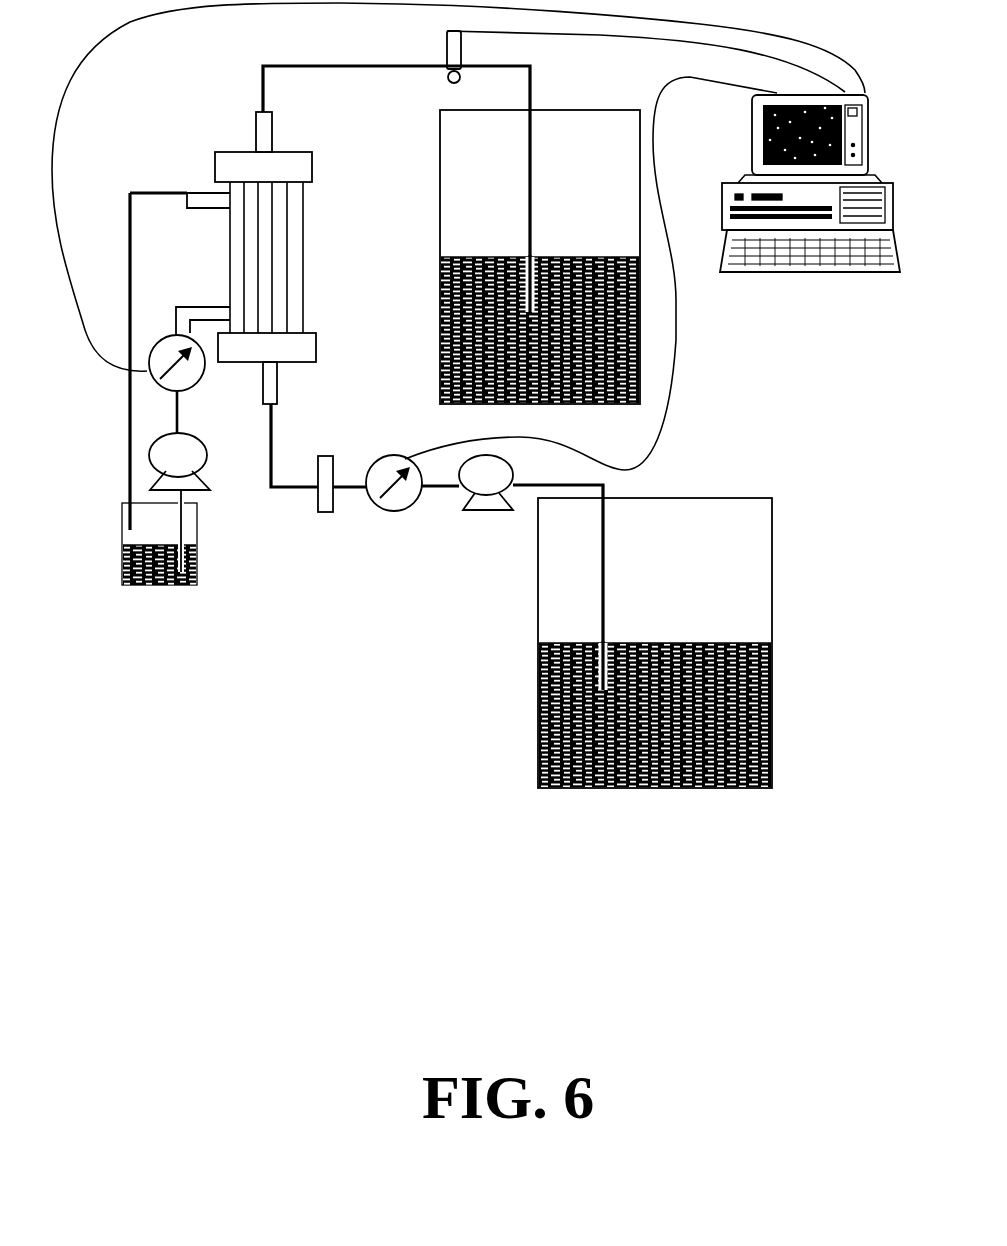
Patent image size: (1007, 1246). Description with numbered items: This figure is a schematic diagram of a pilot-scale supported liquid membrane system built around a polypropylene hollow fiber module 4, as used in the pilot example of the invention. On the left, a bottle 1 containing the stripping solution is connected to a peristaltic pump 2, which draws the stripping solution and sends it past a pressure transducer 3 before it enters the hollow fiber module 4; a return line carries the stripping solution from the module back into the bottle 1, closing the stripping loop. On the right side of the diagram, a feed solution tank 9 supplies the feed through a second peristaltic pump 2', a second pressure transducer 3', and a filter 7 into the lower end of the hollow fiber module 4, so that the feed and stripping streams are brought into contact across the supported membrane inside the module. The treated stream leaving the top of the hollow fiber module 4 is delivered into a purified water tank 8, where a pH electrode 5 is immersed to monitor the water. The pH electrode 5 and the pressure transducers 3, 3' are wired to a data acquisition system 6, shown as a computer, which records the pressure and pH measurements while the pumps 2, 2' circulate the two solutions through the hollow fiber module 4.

The bottle 1 is at (159, 415).
The peristaltic pump 2 is at (191, 441).
The pressure transducer 3 is at (191, 355).
The hollow fiber module 4 is at (330, 276).
The pH electrode 5 is at (624, 61).
The data acquisition system 6 is at (652, 273).
The filter 7 is at (342, 508).
The pressure transducer 3' is at (412, 507).
The peristaltic pump 2' is at (531, 572).
The purified water tank 8 is at (540, 279).
The feed solution tank 9 is at (655, 665).